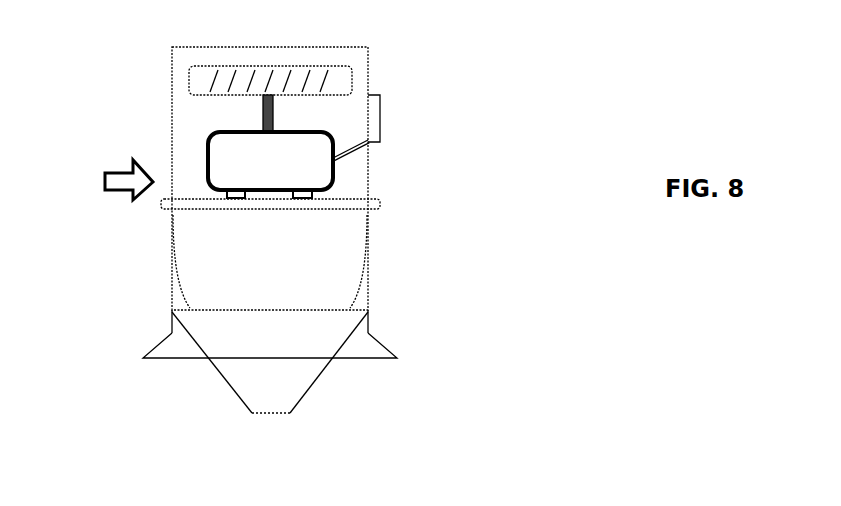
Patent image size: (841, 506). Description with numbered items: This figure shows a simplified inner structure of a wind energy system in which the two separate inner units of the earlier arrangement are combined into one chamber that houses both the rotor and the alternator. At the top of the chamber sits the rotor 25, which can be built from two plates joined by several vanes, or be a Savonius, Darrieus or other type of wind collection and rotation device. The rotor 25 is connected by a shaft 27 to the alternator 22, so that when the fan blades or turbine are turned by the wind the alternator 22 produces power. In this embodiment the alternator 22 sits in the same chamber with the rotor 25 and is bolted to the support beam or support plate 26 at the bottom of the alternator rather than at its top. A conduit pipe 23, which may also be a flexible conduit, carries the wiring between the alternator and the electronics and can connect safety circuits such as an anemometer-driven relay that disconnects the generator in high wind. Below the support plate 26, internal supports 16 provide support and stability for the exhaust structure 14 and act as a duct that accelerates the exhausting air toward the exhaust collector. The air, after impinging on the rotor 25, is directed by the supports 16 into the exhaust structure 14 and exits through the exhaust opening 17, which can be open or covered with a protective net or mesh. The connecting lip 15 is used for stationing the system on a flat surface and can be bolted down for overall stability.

The exhaust structure 14 is at (228, 371).
The connecting lip 15 is at (151, 345).
The internal support 16 is at (177, 279).
The exhaust opening 17 is at (272, 418).
The alternator 22 is at (209, 159).
The conduit pipe 23 is at (354, 156).
The rotor 25 is at (355, 83).
The support plate 26 is at (383, 205).
The shaft 27 is at (276, 118).